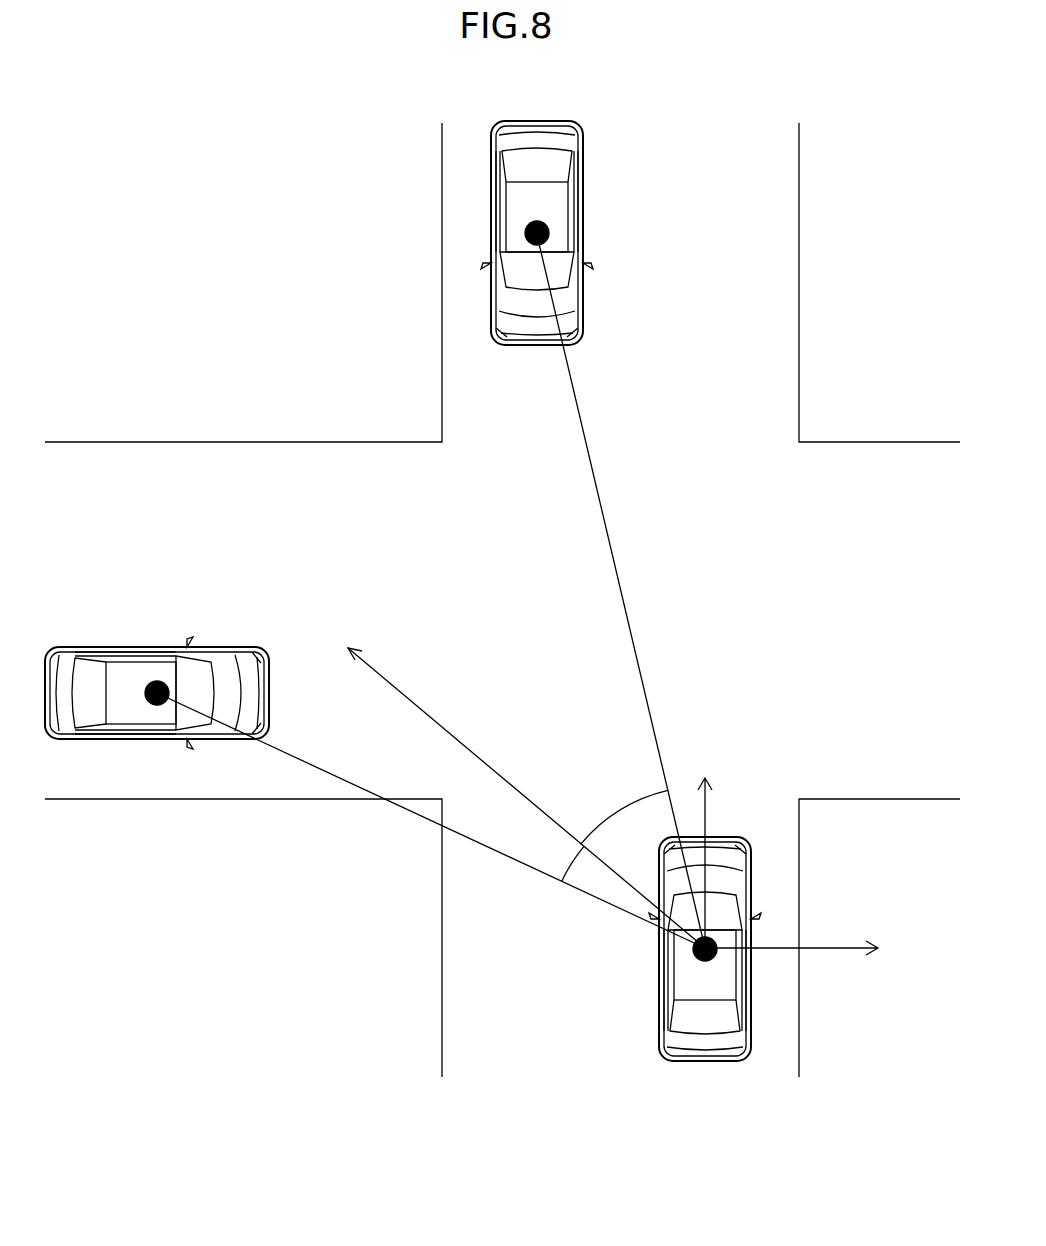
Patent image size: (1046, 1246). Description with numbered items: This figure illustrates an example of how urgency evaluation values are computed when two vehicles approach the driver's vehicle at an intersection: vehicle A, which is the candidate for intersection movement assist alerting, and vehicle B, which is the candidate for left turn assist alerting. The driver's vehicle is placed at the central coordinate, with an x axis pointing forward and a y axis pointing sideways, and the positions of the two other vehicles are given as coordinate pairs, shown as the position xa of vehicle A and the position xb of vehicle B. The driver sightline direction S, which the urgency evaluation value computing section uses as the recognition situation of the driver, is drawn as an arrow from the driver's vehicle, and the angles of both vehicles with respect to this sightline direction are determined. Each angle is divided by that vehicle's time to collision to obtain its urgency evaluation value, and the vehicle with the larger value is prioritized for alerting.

The vehicle A is at (130, 650).
The vehicle B is at (490, 216).
The position coordinates of vehicle A xa is at (159, 777).
The position coordinates of vehicle B xb is at (683, 240).
The driver sightline direction S is at (442, 724).
The x axis x is at (707, 845).
The y axis y is at (805, 948).